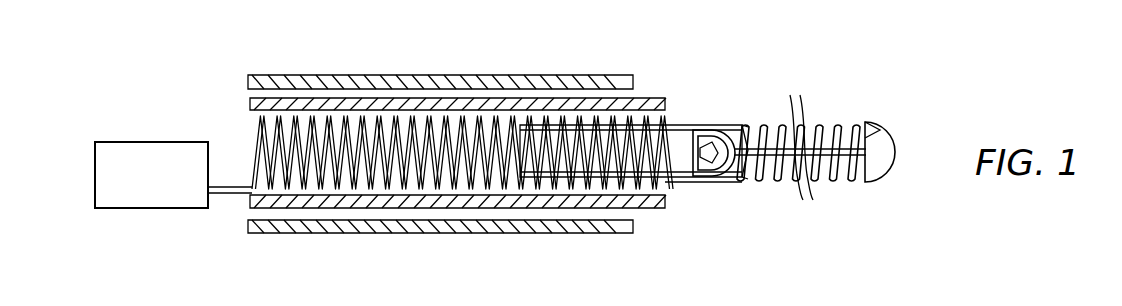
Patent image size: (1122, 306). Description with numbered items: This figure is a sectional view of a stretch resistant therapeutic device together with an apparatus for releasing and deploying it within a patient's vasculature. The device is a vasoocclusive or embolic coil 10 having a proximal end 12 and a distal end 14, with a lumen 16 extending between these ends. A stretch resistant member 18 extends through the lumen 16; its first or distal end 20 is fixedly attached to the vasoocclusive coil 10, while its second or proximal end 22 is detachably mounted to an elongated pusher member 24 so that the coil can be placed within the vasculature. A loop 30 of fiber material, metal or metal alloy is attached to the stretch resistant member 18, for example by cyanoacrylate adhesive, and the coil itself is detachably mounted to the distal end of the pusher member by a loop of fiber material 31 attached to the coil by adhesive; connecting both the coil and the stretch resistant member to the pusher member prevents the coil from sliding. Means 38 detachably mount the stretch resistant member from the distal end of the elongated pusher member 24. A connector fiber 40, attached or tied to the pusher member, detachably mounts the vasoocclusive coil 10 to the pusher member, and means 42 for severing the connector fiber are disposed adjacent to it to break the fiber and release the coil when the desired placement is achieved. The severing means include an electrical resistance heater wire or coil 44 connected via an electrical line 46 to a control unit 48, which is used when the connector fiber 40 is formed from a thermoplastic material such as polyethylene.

The vasoocclusive coil 10 is at (812, 104).
The proximal end 12 is at (740, 184).
The distal end 14 is at (866, 122).
The lumen 16 is at (801, 200).
The stretch resistant member 18 is at (850, 180).
The first or distal end 20 is at (882, 128).
The second or proximal end 22 is at (735, 128).
The elongated pusher member 24 is at (254, 158).
The loop 30 is at (732, 180).
The loop of fiber material 31 is at (718, 130).
The means for detachably mounting 38 is at (692, 112).
The connector fiber 40 is at (527, 128).
The means for severing the connector fiber 42 is at (150, 228).
The electrical resistance heater wire or coil 44 is at (690, 184).
The electrical line 46 is at (221, 193).
The control unit 48 is at (117, 143).